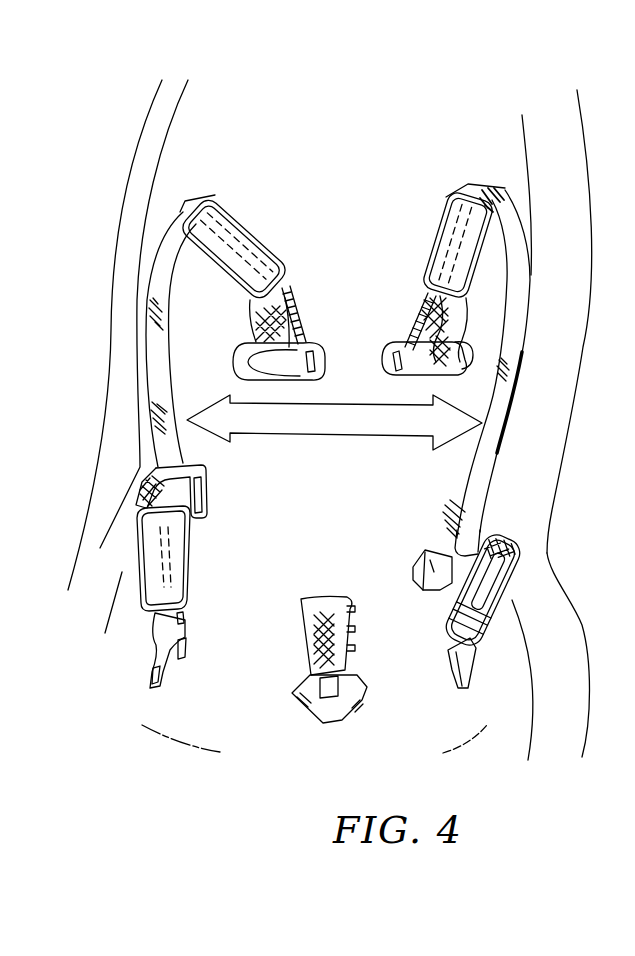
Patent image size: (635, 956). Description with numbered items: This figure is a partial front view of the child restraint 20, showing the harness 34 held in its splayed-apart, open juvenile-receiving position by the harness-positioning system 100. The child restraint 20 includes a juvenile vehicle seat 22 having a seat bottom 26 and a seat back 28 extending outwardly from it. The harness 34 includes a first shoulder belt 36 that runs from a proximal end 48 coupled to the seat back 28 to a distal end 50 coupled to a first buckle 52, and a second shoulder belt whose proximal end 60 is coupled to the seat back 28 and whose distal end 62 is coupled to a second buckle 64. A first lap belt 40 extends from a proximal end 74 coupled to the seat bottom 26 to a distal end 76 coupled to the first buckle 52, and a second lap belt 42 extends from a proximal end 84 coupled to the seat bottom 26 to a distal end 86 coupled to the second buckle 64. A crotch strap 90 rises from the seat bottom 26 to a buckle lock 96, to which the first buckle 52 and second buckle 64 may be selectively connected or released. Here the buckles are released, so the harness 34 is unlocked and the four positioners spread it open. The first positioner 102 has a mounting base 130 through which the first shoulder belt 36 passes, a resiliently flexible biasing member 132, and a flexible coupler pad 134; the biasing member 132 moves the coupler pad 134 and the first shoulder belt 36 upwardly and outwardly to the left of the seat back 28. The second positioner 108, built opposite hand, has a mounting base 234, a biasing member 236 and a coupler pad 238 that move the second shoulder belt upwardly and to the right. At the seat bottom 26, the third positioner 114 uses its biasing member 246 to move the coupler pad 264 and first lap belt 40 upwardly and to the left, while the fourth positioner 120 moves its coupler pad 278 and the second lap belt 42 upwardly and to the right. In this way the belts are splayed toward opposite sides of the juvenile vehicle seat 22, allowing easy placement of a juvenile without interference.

The child restraint 20 is at (448, 127).
The juvenile vehicle seat 22 is at (592, 160).
The seat bottom 26 is at (203, 713).
The seat back 28 is at (520, 137).
The harness 34 is at (187, 287).
The first shoulder belt 36 is at (162, 352).
The first lap belt 40 is at (177, 568).
The second lap belt 42 is at (508, 590).
The proximal end 48 is at (277, 357).
The distal end 50 is at (192, 457).
The first buckle 52 is at (205, 493).
The proximal end 60 is at (430, 360).
The distal end 62 is at (437, 550).
The second buckle 64 is at (413, 573).
The proximal end 74 is at (173, 662).
The distal end 76 is at (157, 490).
The proximal end 84 is at (472, 657).
The distal end 86 is at (465, 623).
The crotch strap 90 is at (331, 670).
The buckle lock 96 is at (360, 703).
The harness-positioning system 100 is at (347, 213).
The first positioner 102 is at (276, 294).
The second positioner 108 is at (417, 288).
The third positioner 114 is at (192, 552).
The fourth positioner 120 is at (533, 567).
The mounting base 130 is at (315, 380).
The biasing member 132 is at (297, 337).
The coupler pad 134 is at (258, 230).
The mounting base 234 is at (380, 377).
The biasing member 236 is at (408, 327).
The coupler pad 238 is at (437, 232).
The biasing member 246 is at (182, 615).
The coupler pad 264 is at (190, 573).
The coupler pad 278 is at (567, 607).